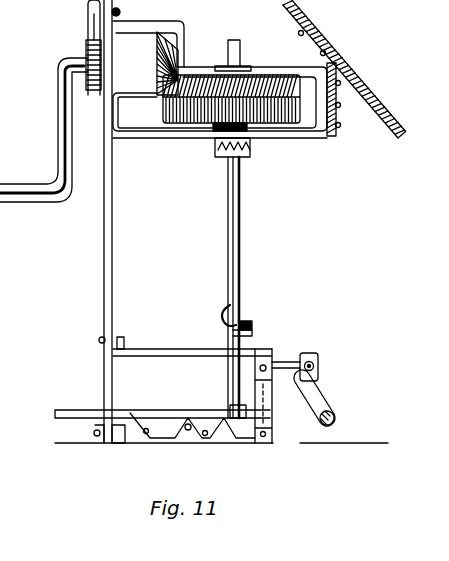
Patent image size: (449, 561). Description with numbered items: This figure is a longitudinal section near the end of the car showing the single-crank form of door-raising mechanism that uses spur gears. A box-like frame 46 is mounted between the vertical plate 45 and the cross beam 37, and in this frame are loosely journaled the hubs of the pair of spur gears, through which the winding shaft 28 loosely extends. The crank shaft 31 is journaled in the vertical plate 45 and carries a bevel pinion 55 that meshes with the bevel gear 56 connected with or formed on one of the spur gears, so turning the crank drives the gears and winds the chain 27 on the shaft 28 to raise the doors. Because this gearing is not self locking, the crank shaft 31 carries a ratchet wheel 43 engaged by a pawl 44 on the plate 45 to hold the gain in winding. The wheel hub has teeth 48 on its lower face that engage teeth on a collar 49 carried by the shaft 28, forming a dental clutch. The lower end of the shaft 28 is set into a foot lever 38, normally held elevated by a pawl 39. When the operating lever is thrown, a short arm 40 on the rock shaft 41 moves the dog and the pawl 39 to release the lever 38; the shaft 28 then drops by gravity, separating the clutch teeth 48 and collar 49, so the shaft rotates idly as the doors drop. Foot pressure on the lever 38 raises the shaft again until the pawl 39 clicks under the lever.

The chain 27 is at (252, 326).
The winding shaft 28 is at (243, 230).
The crank shaft 31 is at (58, 101).
The cross beam 37 is at (336, 102).
The foot lever 38 is at (168, 416).
The pawl 39 is at (310, 355).
The short arm 40 is at (318, 397).
The rock shaft 41 is at (334, 418).
The ratchet wheel 43 is at (94, 91).
The pawl 44 is at (88, 30).
The vertical plate 45 is at (113, 190).
The box-like frame 46 is at (288, 132).
The teeth 48 is at (250, 140).
The collar 49 is at (219, 150).
The bevel pinion 55 is at (172, 46).
The bevel gear 56 is at (265, 80).